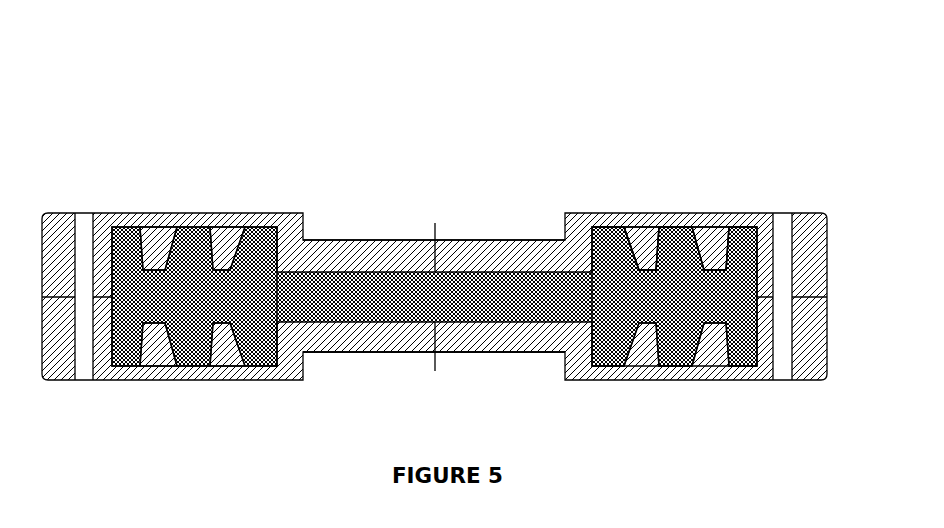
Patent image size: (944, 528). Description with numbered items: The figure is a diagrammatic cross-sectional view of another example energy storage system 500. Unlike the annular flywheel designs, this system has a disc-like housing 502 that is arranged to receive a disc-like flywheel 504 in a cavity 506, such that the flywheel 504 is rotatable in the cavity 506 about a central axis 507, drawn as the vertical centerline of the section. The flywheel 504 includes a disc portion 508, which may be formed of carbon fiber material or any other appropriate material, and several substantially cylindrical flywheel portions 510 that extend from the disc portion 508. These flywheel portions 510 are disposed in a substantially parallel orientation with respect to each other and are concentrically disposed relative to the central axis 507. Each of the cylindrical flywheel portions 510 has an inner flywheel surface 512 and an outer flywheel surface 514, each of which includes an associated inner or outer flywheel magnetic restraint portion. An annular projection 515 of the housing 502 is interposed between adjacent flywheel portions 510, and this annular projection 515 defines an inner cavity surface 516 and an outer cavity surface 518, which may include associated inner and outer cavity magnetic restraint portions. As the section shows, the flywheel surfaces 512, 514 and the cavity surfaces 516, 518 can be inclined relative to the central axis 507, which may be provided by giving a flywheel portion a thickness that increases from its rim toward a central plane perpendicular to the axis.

The energy storage system 500 is at (503, 143).
The housing 502 is at (421, 240).
The flywheel 504 is at (355, 350).
The cavity 506 is at (368, 272).
The central axis 507 is at (435, 357).
The disc portion 508 is at (508, 300).
The cylindrical flywheel portions 510 is at (262, 357).
The inner flywheel surface 512 is at (151, 233).
The outer flywheel surface 514 is at (113, 243).
The annular projection 515 is at (650, 240).
The inner cavity surface 516 is at (606, 232).
The outer cavity surface 518 is at (690, 355).